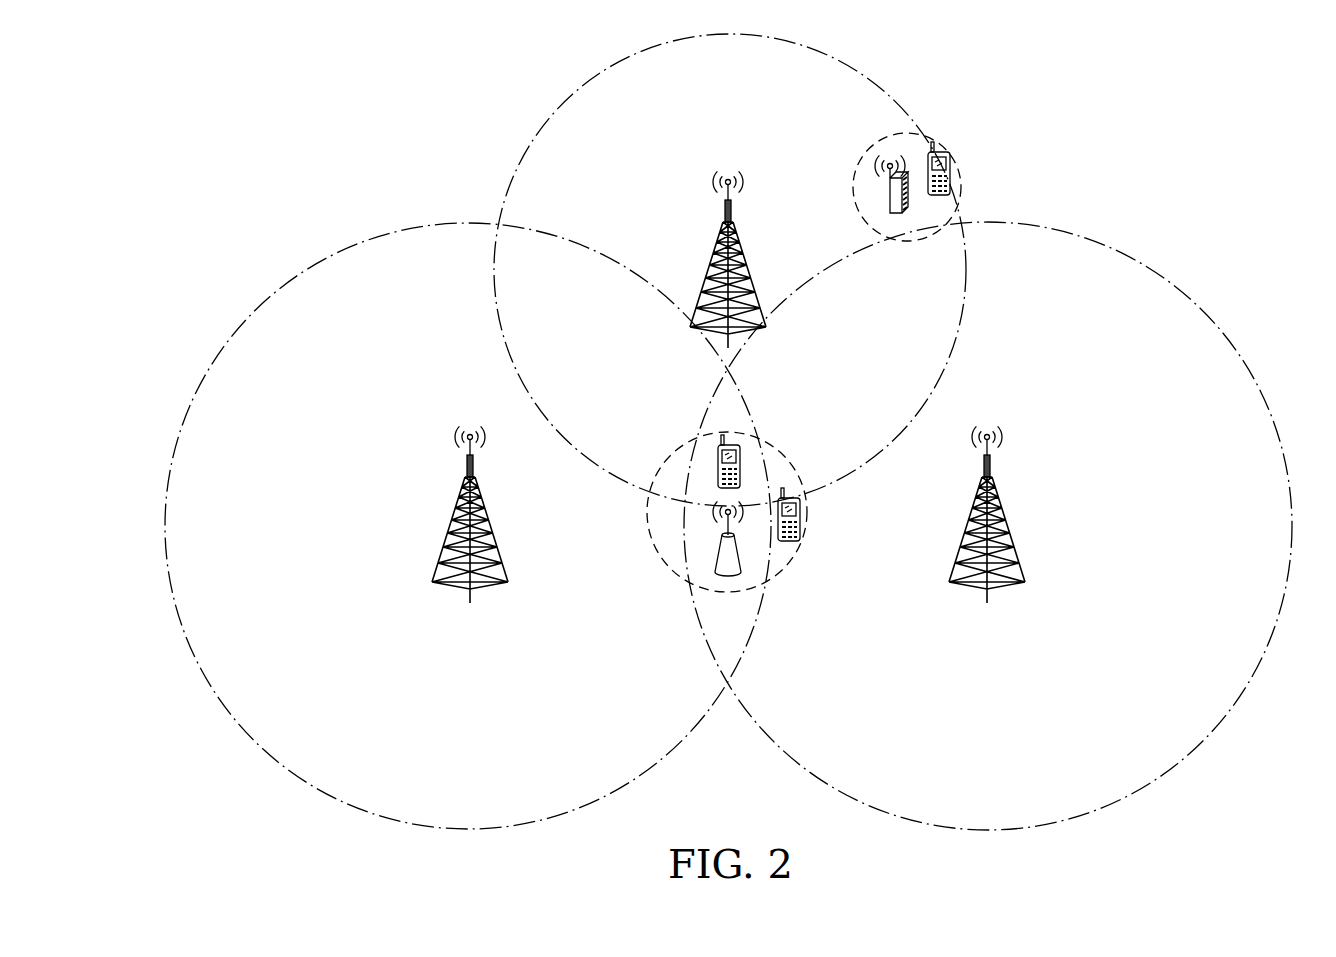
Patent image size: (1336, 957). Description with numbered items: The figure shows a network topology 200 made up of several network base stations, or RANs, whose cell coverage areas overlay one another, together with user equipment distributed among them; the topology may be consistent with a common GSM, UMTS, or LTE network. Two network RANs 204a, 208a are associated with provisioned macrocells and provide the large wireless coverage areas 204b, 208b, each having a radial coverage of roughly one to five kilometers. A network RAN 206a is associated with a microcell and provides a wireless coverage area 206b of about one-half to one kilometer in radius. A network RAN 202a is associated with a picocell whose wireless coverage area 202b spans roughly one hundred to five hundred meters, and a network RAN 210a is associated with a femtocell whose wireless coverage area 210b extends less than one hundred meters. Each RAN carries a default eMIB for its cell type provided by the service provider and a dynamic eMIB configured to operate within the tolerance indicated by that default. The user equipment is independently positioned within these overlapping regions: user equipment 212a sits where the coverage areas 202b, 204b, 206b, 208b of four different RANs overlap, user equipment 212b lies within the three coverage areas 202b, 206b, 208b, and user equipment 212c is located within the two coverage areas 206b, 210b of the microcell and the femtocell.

The network topology 200 is at (333, 119).
The network RAN 202a is at (746, 560).
The picocell wireless coverage area 202b is at (662, 470).
The network RAN 204a is at (452, 525).
The macrocell wireless coverage area 204b is at (238, 330).
The network RAN 206a is at (714, 265).
The microcell wireless coverage area 206b is at (596, 73).
The network RAN 208a is at (1005, 525).
The macrocell wireless coverage area 208b is at (1200, 310).
The network RAN 210a is at (890, 200).
The femtocell wireless coverage area 210b is at (886, 137).
The user equipment 212a is at (741, 465).
The user equipment 212b is at (801, 520).
The user equipment 212c is at (951, 168).